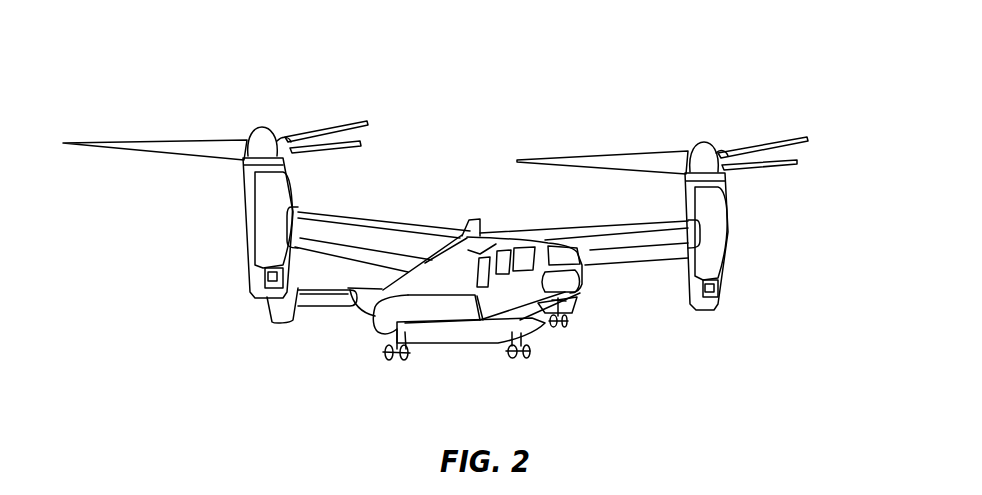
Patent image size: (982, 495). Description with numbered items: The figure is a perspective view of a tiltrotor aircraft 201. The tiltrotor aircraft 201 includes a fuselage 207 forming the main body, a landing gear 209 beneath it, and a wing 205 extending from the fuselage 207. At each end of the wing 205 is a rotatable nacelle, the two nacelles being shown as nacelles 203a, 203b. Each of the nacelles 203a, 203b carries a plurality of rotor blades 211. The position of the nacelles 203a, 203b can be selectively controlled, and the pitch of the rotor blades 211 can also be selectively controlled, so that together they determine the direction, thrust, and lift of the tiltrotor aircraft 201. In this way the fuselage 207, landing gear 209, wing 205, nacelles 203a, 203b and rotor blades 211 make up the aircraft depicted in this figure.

The tiltrotor aircraft 201 is at (527, 109).
The rotatable nacelle 203a is at (233, 242).
The rotatable nacelle 203b is at (743, 252).
The wing 205 is at (368, 218).
The fuselage 207 is at (582, 288).
The landing gear 209 is at (380, 357).
The rotor blades 211 is at (347, 125).